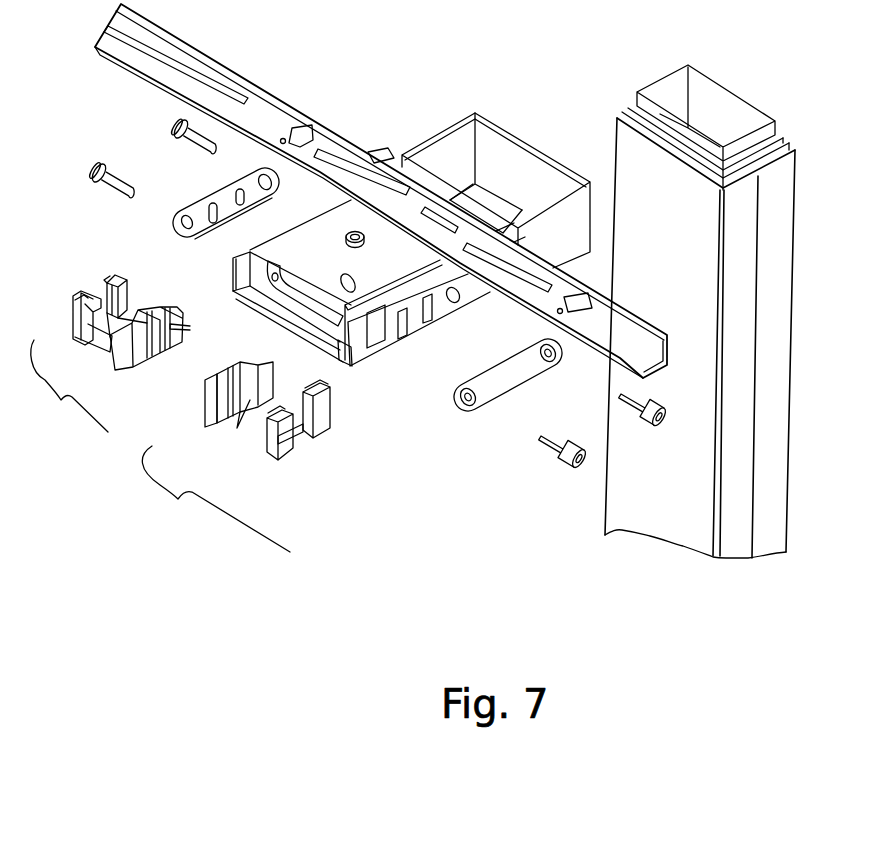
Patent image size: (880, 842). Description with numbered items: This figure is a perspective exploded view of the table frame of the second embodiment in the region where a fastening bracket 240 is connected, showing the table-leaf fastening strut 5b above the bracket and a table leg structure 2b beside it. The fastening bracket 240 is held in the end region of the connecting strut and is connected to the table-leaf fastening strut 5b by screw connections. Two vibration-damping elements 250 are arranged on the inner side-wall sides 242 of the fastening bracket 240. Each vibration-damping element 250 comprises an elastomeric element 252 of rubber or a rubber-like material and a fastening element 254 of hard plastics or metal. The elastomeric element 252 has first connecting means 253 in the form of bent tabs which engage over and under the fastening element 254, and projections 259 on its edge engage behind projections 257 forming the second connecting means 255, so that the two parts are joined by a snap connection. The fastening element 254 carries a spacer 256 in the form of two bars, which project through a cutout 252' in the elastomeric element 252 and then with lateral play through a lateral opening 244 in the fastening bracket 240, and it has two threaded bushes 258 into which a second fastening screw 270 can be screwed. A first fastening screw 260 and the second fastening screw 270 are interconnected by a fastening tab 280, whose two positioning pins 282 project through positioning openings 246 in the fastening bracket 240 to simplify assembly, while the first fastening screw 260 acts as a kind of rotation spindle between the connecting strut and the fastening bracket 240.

The table-leaf fastening strut 5b is at (213, 68).
The table leg structure 2b is at (661, 512).
The fastening bracket 240 is at (332, 298).
The inner side-wall side 242 is at (337, 364).
The lateral opening 244 is at (377, 340).
The positioning opening 246 is at (403, 337).
The vibration-damping element 250 is at (160, 446).
The elastomeric element 252 is at (253, 359).
The cutout 252' is at (218, 364).
The first connecting means 253 is at (333, 413).
The fastening element 254 is at (240, 367).
The second connecting means 255 is at (272, 365).
The spacer 256 is at (244, 422).
The projection 257 is at (215, 420).
The threaded bush 258 is at (190, 327).
The projection 259 is at (330, 390).
The first fastening screw 260 is at (634, 410).
The second fastening screw 270 is at (552, 448).
The fastening tab 280 is at (513, 375).
The positioning pin 282 is at (245, 200).